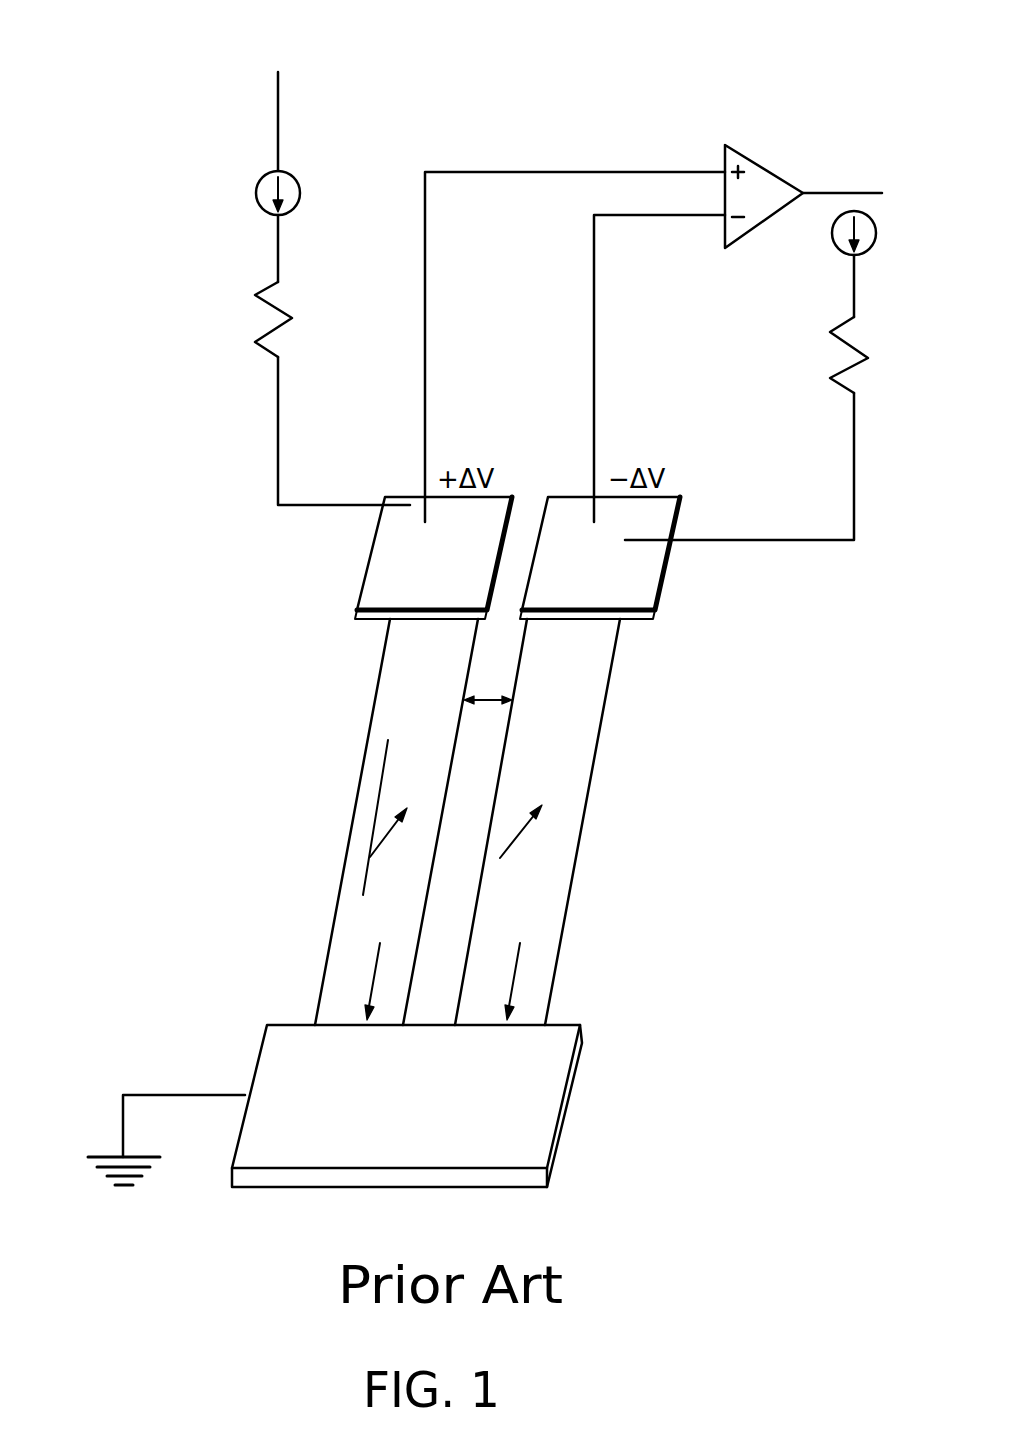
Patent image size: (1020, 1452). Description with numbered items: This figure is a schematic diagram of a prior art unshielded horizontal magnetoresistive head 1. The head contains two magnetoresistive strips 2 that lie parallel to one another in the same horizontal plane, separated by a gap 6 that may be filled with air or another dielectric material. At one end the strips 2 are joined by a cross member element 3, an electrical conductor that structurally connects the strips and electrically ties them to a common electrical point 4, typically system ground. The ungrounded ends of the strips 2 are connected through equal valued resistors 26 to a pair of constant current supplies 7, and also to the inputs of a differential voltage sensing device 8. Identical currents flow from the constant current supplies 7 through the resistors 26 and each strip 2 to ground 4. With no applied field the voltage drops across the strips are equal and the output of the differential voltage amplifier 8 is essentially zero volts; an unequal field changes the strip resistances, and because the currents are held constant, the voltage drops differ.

The unshielded horizontal magnetoresistive head 1 is at (252, 64).
The magnetoresistive strips 2 is at (333, 925).
The cross member element 3 is at (543, 1125).
The common electrical point 4 is at (123, 1143).
The gap 6 is at (490, 700).
The constant current supplies 7 is at (256, 193).
The differential voltage sensing device 8 is at (766, 172).
The resistors 26 is at (268, 330).